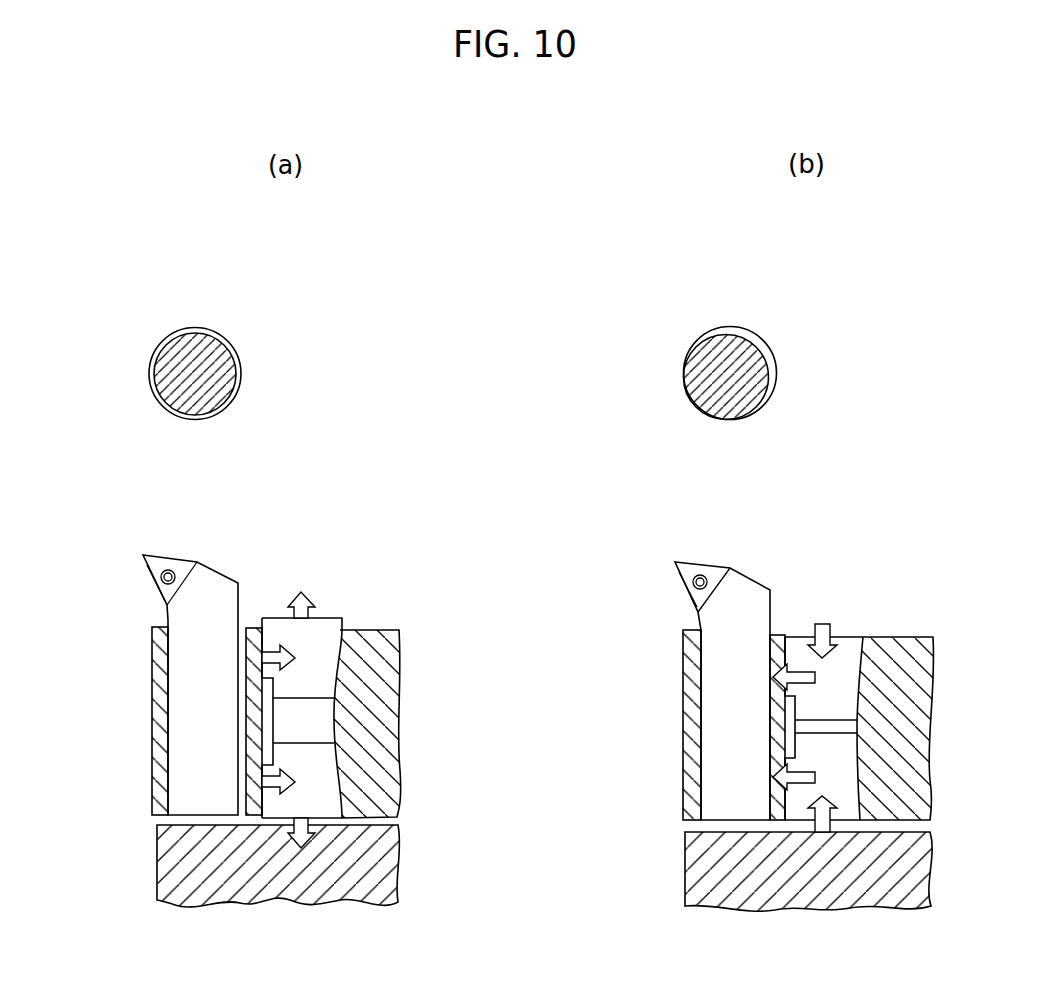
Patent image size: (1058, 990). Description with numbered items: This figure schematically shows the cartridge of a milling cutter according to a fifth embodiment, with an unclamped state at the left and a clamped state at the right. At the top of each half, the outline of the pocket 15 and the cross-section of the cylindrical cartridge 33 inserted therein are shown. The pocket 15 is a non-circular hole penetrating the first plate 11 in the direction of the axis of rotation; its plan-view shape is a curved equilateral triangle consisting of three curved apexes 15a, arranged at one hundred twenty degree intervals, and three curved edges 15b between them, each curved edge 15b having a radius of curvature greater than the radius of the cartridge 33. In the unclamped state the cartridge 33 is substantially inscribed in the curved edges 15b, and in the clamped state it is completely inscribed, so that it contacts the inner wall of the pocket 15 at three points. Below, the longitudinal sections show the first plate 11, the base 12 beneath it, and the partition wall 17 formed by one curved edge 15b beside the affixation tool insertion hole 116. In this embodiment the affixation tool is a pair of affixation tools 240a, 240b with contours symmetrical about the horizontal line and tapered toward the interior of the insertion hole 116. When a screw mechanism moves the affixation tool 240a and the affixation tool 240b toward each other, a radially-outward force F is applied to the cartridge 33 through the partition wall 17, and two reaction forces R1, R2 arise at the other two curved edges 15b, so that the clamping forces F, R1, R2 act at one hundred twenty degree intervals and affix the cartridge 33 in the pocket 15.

The pocket 15 is at (244, 346).
The curved apexes 15a is at (220, 330).
The curved edges 15b is at (168, 337).
The cartridge 33 is at (198, 346).
The first plate 11 is at (157, 755).
The partition wall 17 is at (253, 630).
The base 12 is at (157, 863).
The affixation tool insertion hole 116 is at (378, 682).
The affixation tool 240a is at (318, 612).
The affixation tool 240b is at (323, 793).
The reaction force R1 is at (712, 324).
The reaction force R2 is at (712, 422).
The radially-outward force F is at (783, 373).